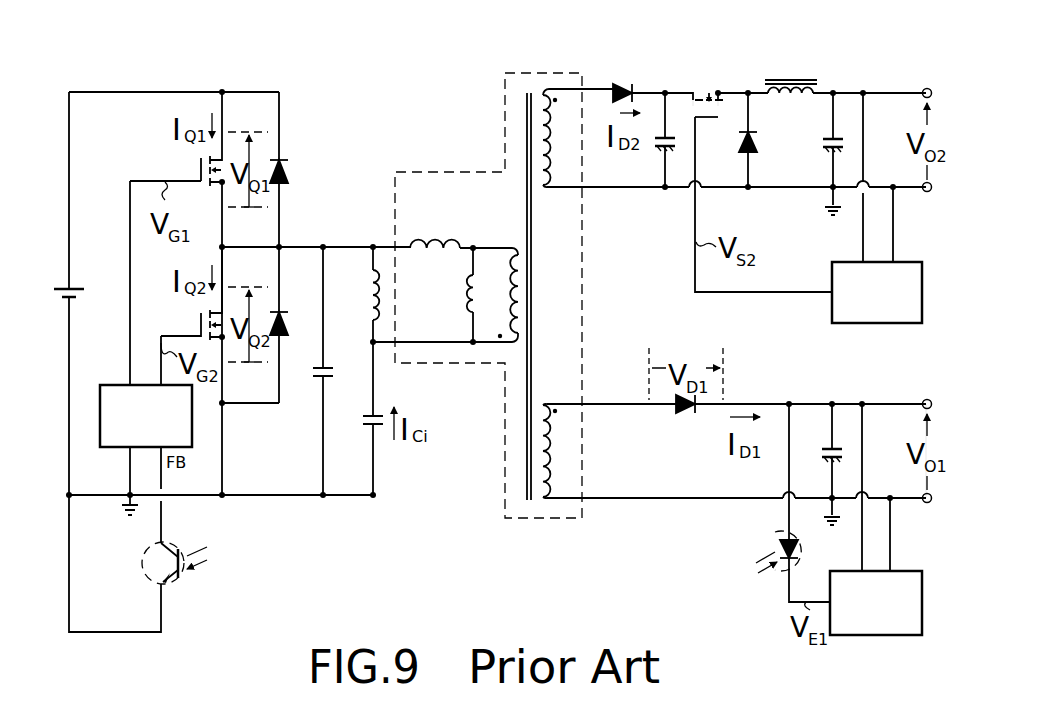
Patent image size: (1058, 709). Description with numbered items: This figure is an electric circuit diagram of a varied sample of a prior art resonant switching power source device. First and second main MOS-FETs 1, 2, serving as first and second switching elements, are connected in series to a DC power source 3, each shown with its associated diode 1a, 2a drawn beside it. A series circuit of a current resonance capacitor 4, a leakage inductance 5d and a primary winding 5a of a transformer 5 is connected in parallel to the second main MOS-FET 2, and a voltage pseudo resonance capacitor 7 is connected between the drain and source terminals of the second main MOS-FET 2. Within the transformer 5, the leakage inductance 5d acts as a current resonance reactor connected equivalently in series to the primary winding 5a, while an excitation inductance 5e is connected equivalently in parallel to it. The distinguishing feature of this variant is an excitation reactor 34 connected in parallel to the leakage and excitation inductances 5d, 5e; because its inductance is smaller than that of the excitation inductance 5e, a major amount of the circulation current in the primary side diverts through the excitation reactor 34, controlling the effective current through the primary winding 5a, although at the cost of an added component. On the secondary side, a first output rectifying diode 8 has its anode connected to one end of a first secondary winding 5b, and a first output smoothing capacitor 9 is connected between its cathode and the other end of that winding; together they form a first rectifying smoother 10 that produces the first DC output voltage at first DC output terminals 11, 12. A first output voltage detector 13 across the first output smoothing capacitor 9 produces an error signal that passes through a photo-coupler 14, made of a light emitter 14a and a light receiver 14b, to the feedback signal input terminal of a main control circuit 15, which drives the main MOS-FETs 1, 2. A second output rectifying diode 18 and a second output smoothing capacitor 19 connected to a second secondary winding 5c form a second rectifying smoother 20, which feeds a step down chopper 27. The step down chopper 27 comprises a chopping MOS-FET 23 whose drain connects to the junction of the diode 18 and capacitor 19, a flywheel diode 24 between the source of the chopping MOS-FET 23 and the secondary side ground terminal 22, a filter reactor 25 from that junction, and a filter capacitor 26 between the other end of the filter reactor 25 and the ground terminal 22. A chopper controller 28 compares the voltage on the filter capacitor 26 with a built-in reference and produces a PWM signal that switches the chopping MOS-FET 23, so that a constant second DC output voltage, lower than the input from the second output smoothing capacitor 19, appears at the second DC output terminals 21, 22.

The first main MOS-FET 1 is at (200, 167).
The diode of first switching element 1a is at (283, 159).
The second main MOS-FET 2 is at (199, 324).
The diode of second switching element 2a is at (283, 319).
The DC power source 3 is at (60, 286).
The current resonance capacitor 4 is at (364, 427).
The transformer 5 is at (504, 119).
The primary winding 5a is at (516, 249).
The first secondary winding 5b is at (544, 402).
The second secondary winding 5c is at (544, 190).
The leakage inductance 5d is at (435, 243).
The excitation inductance 5e is at (466, 301).
The voltage pseudo resonance capacitor 7 is at (315, 375).
The first output rectifying diode 8 is at (683, 413).
The first output smoothing capacitor 9 is at (824, 451).
The first rectifying smoother 10 is at (821, 386).
The first DC output terminal 11 is at (927, 399).
The first DC output terminal 12 is at (927, 504).
The first output voltage detector 13 is at (895, 620).
The photo-coupler 14 is at (731, 573).
The light emitter 14a is at (768, 534).
The light receiver 14b is at (150, 578).
The main control circuit 15 is at (165, 434).
The second output rectifying diode 18 is at (620, 90).
The second output smoothing capacitor 19 is at (658, 142).
The second rectifying smoother 20 is at (628, 205).
The second DC output terminal 21 is at (927, 87).
The second DC output terminal 22 is at (927, 193).
The chopping MOS-FET 23 is at (705, 94).
The flywheel diode 24 is at (738, 138).
The filter reactor 25 is at (790, 81).
The filter capacitor 26 is at (822, 140).
The step down chopper 27 is at (831, 81).
The chopper controller 28 is at (896, 310).
The excitation reactor 34 is at (370, 300).